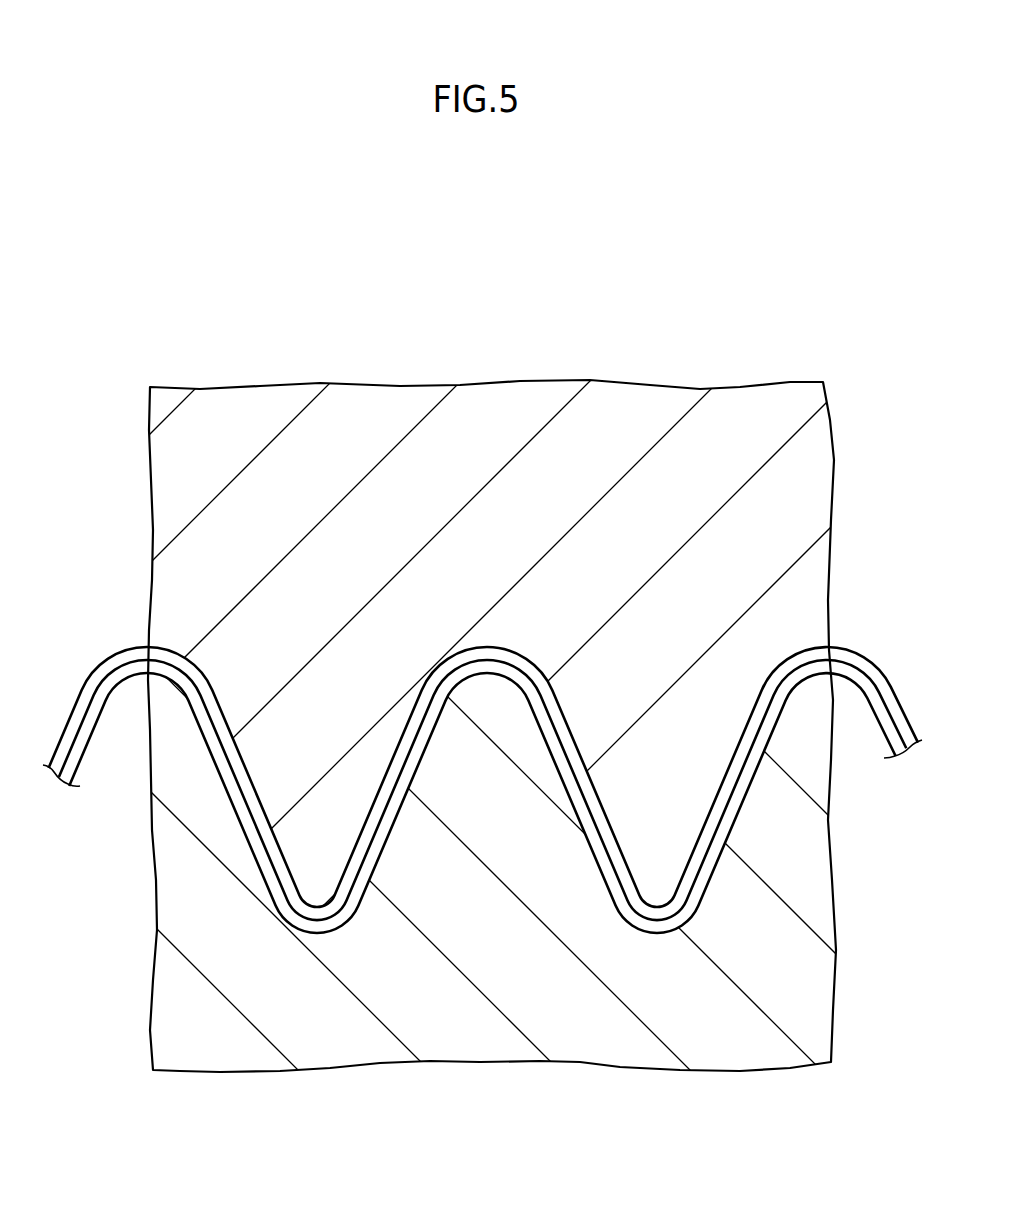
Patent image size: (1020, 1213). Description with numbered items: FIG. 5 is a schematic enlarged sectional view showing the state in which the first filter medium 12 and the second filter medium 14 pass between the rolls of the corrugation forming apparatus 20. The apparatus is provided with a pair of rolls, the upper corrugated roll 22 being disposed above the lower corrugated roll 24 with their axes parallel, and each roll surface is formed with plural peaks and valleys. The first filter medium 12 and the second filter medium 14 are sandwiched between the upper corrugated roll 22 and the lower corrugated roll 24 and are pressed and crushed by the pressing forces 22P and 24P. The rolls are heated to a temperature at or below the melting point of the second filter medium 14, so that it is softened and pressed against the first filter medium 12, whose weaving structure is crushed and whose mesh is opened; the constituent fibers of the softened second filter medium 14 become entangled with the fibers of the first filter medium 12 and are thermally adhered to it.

The first filter medium 12 is at (602, 870).
The second filter medium 14 is at (560, 708).
The corrugation forming apparatus 20 is at (542, 358).
The upper corrugated roll 22 is at (622, 415).
The lower corrugated roll 24 is at (582, 1033).
The pressing force 22P is at (315, 848).
The pressing force 24P is at (487, 750).